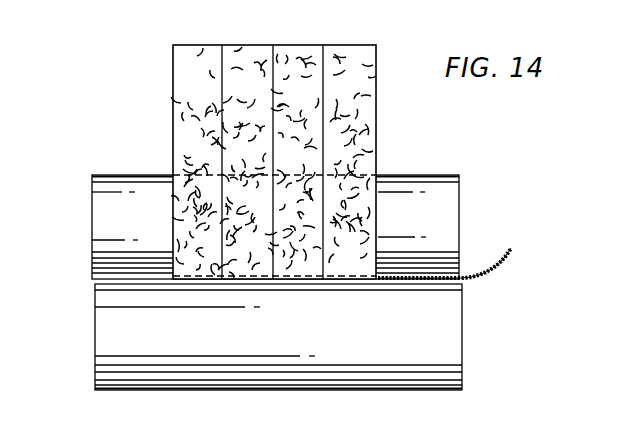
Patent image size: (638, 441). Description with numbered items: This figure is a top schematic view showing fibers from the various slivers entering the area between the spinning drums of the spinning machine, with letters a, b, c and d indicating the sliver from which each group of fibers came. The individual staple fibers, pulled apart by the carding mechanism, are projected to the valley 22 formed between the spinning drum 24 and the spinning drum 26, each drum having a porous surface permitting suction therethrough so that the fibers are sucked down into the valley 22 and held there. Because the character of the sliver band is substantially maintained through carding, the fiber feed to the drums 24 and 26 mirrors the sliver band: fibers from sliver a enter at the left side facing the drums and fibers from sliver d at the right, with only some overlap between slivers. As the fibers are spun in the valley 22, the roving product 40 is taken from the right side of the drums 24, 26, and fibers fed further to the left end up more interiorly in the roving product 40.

The valley 22 is at (117, 277).
The spinning drum 24 is at (403, 173).
The spinning drum 26 is at (443, 391).
The roving product 40 is at (500, 261).